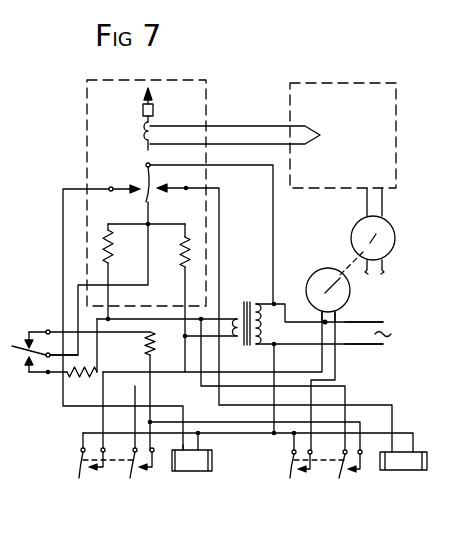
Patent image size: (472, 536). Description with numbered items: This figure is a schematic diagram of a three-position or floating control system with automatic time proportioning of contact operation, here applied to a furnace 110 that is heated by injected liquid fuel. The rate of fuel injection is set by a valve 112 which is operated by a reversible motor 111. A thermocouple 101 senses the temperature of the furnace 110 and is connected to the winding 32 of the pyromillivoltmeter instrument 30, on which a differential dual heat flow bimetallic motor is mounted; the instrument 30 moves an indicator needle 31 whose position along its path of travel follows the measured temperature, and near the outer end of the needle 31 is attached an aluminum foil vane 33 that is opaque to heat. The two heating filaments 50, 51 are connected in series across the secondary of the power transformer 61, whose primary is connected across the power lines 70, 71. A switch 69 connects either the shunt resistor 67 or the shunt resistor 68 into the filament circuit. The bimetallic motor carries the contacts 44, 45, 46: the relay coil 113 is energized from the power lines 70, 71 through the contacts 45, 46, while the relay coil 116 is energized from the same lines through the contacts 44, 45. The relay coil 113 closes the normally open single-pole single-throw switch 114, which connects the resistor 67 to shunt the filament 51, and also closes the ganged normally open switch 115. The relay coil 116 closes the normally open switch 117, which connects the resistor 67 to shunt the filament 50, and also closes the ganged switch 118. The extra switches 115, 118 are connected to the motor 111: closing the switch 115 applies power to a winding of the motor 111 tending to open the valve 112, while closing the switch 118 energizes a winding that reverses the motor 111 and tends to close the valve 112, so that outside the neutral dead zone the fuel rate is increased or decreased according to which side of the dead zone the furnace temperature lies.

The instrument 30 is at (206, 94).
The indicator needle 31 is at (142, 97).
The armature 32 is at (143, 134).
The aluminum foil vane 33 is at (153, 108).
The contact 44 is at (171, 189).
The contact 45 is at (139, 171).
The contact 46 is at (122, 187).
The filament 50 is at (113, 238).
The filament 51 is at (179, 239).
The power transformer 61 is at (254, 302).
The shunt resistor 67 is at (143, 343).
The shunt resistor 68 is at (96, 379).
The switch 69 is at (27, 335).
The power line 70 is at (363, 322).
The power line 71 is at (360, 345).
The thermocouple 101 is at (308, 126).
The furnace 110 is at (329, 82).
The motor 111 is at (330, 268).
The valve 112 is at (355, 222).
The relay coil 113 is at (188, 472).
The switch 114 is at (132, 473).
The switch 115 is at (79, 473).
The relay coil 116 is at (393, 470).
The switch 117 is at (344, 476).
The switch 118 is at (289, 475).